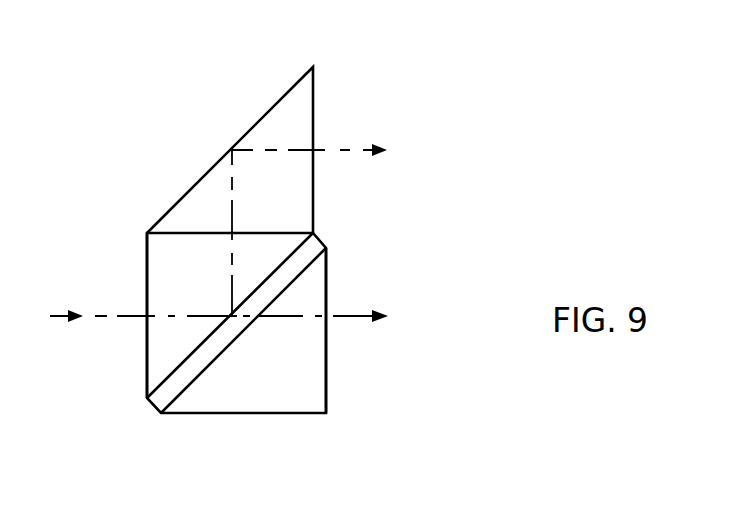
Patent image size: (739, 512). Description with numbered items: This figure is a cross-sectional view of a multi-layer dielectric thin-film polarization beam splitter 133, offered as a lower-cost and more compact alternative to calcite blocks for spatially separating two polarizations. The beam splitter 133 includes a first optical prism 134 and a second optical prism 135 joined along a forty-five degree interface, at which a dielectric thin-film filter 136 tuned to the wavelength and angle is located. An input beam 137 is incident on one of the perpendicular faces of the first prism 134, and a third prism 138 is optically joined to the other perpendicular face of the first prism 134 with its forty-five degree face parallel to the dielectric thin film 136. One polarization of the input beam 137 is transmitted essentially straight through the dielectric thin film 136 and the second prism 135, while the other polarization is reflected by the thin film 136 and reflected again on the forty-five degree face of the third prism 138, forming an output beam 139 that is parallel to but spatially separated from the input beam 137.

The multi-layer dielectric thin-film polarization beam splitter 133 is at (382, 80).
The first optical prism 134 is at (153, 353).
The second optical prism 135 is at (317, 371).
The dielectric thin-film filter 136 is at (326, 243).
The input beam 137 is at (98, 310).
The third prism 138 is at (303, 182).
The output beam 139 is at (347, 147).